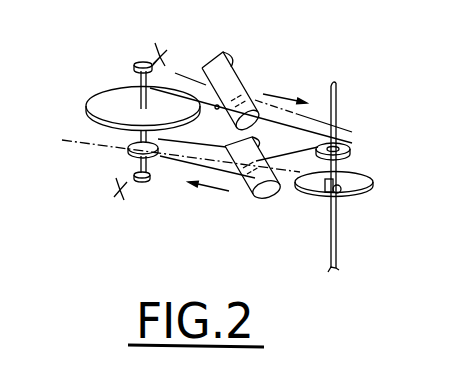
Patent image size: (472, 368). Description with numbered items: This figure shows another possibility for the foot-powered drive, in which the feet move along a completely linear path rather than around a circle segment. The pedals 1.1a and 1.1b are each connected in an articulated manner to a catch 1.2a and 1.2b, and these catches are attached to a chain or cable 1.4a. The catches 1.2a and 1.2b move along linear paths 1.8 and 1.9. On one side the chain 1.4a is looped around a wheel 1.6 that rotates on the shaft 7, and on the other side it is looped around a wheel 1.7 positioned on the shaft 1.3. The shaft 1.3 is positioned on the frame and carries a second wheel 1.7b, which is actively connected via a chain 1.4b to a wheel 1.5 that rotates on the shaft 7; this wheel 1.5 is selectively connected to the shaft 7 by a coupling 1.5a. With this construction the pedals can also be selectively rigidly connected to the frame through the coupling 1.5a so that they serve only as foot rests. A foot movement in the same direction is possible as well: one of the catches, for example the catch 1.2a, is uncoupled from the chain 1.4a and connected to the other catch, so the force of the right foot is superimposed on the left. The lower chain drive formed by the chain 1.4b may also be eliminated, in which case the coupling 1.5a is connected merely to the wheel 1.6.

The pedal 1.1a is at (224, 55).
The pedal 1.1b is at (265, 197).
The catch 1.2a is at (253, 85).
The catch 1.2b is at (231, 180).
The shaft 1.3 is at (133, 84).
The chain or cable 1.4a is at (309, 131).
The chain 1.4b is at (177, 167).
The wheel 1.5 is at (355, 176).
The coupling 1.5a is at (338, 194).
The wheel 1.6 is at (349, 146).
The wheel 1.7 is at (96, 97).
The second wheel 1.7b is at (130, 150).
The linear path 1.8 is at (175, 73).
The linear path 1.9 is at (80, 142).
The shaft 7 is at (338, 96).